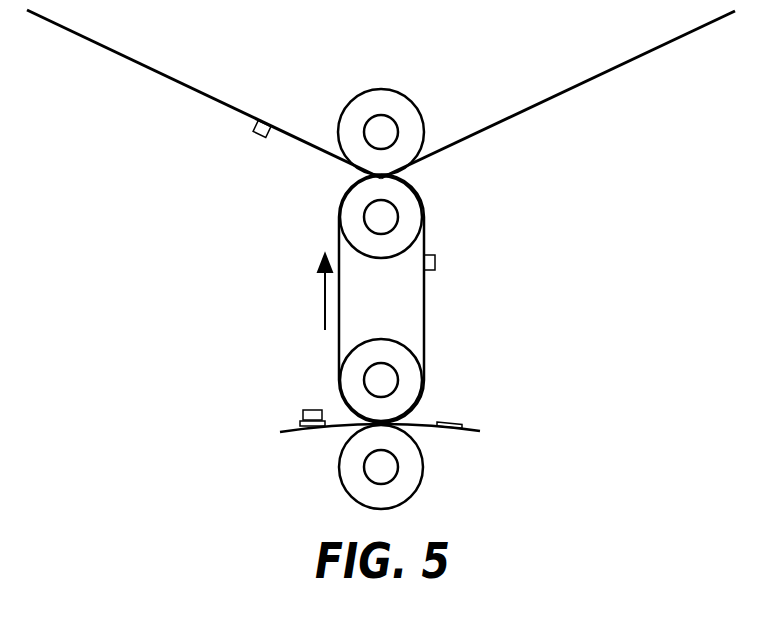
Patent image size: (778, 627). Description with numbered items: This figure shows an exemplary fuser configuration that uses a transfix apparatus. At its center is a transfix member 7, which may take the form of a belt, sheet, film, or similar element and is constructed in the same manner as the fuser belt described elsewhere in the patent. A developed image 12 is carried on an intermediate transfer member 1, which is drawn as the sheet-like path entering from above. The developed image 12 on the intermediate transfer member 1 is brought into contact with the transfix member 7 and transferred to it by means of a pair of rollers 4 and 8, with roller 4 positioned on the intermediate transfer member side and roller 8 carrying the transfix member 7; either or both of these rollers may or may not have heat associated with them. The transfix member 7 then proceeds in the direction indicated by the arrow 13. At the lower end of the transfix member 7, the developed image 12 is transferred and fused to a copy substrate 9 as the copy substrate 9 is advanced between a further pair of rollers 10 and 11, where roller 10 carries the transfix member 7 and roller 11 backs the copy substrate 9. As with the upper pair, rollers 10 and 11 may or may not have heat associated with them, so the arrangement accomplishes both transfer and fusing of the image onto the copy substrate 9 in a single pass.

The intermediate transfer member 1 is at (197, 84).
The roller 4 is at (393, 89).
The transfix member 7 is at (424, 323).
The roller 8 is at (413, 207).
The copy substrate 9 is at (448, 422).
The roller 10 is at (415, 370).
The roller 11 is at (425, 465).
The developed image 12 is at (260, 137).
The arrow 13 is at (322, 298).